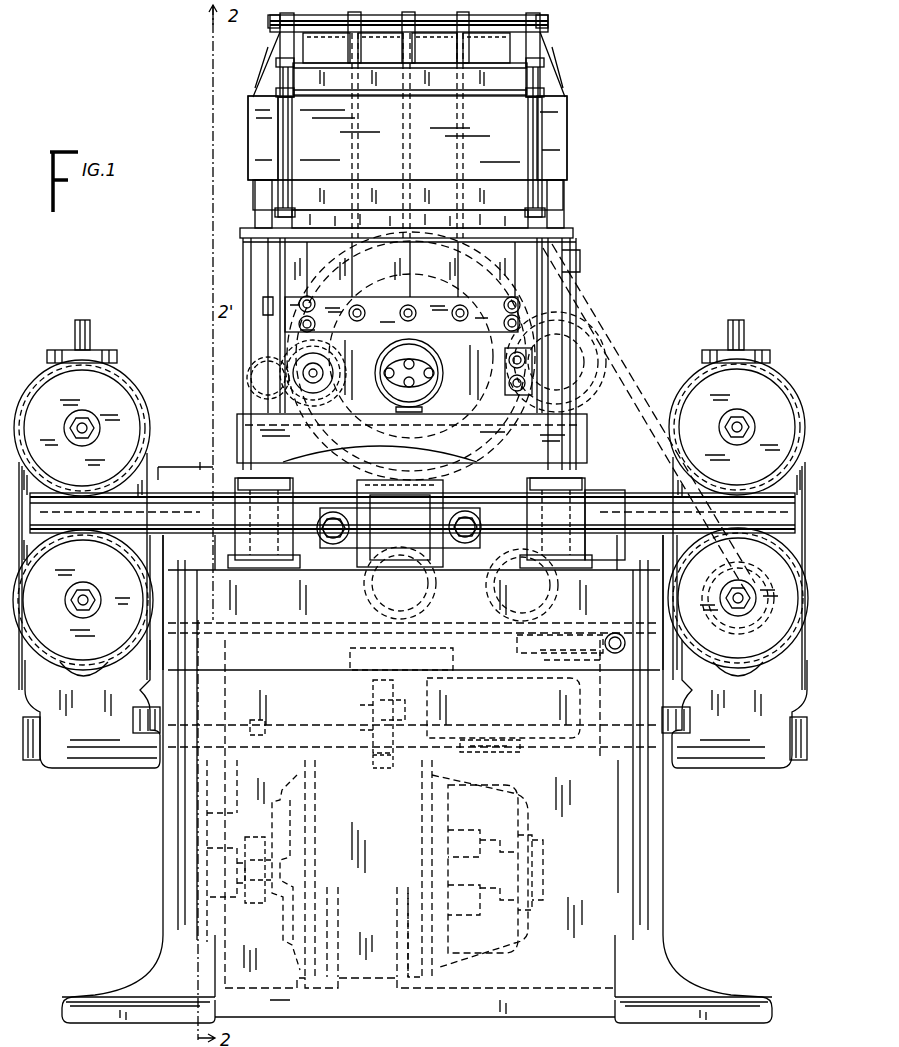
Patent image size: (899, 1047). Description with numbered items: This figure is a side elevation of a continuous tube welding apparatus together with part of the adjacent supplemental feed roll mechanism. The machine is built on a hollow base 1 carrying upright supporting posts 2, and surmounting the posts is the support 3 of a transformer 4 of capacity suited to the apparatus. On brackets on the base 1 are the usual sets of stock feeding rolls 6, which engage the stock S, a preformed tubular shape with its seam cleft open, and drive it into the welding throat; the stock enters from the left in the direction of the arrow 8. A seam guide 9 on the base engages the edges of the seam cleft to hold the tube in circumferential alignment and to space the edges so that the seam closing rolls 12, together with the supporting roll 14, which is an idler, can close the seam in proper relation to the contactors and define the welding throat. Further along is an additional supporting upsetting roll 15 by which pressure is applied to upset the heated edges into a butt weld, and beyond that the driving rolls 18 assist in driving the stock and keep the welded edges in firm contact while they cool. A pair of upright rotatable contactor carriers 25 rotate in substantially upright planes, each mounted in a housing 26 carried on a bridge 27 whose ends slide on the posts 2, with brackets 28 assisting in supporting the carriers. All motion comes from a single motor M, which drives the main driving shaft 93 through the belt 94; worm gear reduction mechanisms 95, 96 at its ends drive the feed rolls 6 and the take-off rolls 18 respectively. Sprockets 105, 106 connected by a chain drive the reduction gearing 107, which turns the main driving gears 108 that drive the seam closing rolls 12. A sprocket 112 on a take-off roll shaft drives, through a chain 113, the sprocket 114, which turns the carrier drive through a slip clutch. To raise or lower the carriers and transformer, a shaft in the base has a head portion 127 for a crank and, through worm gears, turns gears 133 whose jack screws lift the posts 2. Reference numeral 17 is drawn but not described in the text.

The hollow base 1 is at (165, 812).
The upright supporting posts 2 is at (576, 287).
The support 3 is at (576, 237).
The transformer 4 is at (548, 80).
The stock feeding rolls 6 is at (143, 392).
The arrow 8 is at (45, 520).
The seam guide 9 is at (262, 455).
The stock S is at (185, 478).
The seam closing rolls 12 is at (328, 545).
The supporting roll 14 is at (355, 578).
The supporting upsetting roll 15 is at (490, 580).
The bar support pillars 17 is at (410, 519).
The driving rolls 18 is at (690, 398).
The rotatable contactor carriers 25 is at (325, 278).
The housings 26 is at (444, 374).
The bridge 27 is at (428, 384).
The brackets 28 is at (573, 259).
The main driving shaft 93 is at (256, 724).
The belt 94 is at (240, 822).
The worm gear reduction mechanism 95 is at (92, 768).
The worm gear reduction mechanism 96 is at (747, 768).
The sprocket 105 is at (379, 768).
The sprocket 106 is at (372, 688).
The reduction gearing 107 is at (525, 682).
The main driving gears 108 is at (348, 662).
The sprocket 112 is at (722, 628).
The chain 113 is at (649, 417).
The sprocket 114 is at (562, 362).
The head portion 127 is at (615, 653).
The gears 133 is at (520, 645).
The motor M is at (520, 945).